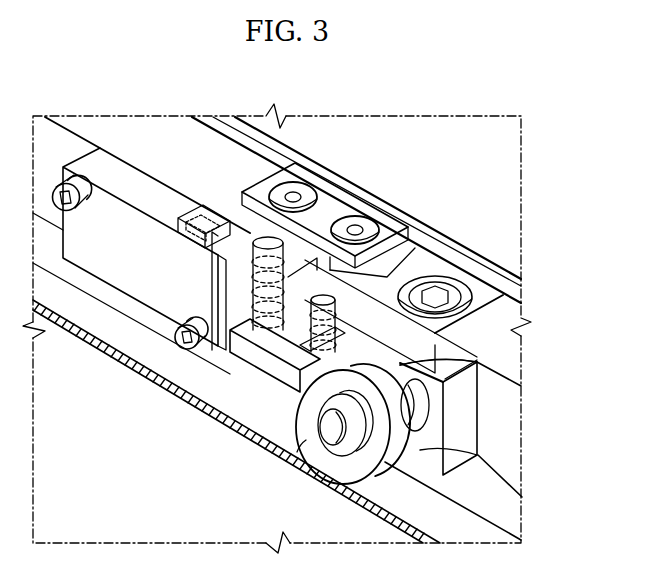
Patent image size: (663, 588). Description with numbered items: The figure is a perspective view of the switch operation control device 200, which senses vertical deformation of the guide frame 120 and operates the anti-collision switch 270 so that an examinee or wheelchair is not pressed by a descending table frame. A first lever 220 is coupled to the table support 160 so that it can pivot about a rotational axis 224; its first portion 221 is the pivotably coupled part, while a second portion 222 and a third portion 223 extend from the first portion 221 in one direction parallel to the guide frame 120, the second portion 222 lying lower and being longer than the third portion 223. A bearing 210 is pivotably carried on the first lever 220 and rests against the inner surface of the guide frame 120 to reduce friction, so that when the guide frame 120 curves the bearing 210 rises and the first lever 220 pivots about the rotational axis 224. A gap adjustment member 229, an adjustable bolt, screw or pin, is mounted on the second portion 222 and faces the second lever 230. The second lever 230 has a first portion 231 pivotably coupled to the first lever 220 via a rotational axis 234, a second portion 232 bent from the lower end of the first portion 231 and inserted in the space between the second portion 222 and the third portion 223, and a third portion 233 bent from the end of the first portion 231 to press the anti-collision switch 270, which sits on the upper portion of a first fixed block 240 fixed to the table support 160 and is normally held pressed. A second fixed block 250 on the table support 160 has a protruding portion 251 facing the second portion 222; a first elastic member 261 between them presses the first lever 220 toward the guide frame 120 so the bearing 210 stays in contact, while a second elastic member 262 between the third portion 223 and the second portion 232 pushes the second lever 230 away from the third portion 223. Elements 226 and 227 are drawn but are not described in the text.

The guide frame 120 is at (400, 525).
The table support 160 is at (207, 142).
The switch operation control device 200 is at (498, 186).
The bearing 210 is at (348, 470).
The first lever 220 is at (480, 425).
The first portion 221 is at (436, 463).
The second portion 222 is at (245, 355).
The third portion 223 is at (430, 285).
The rotational axis 224 is at (425, 440).
The spring 226 is at (272, 352).
The lower plate 227 is at (413, 247).
The gap adjustment member 229 is at (305, 447).
The second lever 230 is at (175, 258).
The first portion 231 is at (230, 287).
The second portion 232 is at (292, 355).
The third portion 233 is at (198, 207).
The rotational axis 234 is at (477, 364).
The first fixed block 240 is at (102, 282).
The second fixed block 250 is at (337, 210).
The protruding portion 251 is at (308, 188).
The first elastic member 261 is at (235, 363).
The second elastic member 262 is at (292, 372).
The anti-collision switch 270 is at (212, 218).